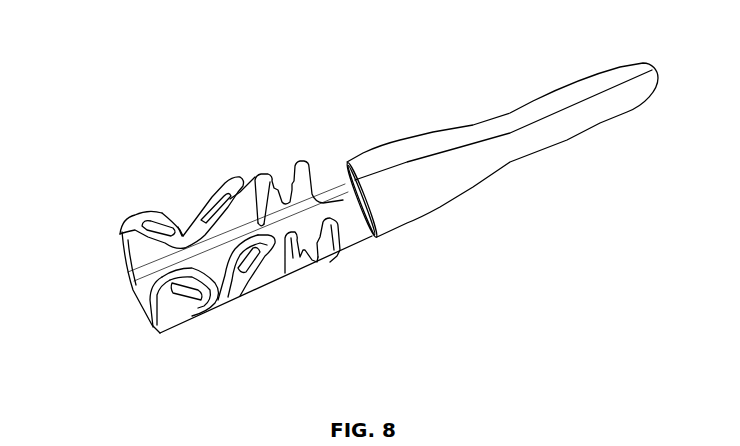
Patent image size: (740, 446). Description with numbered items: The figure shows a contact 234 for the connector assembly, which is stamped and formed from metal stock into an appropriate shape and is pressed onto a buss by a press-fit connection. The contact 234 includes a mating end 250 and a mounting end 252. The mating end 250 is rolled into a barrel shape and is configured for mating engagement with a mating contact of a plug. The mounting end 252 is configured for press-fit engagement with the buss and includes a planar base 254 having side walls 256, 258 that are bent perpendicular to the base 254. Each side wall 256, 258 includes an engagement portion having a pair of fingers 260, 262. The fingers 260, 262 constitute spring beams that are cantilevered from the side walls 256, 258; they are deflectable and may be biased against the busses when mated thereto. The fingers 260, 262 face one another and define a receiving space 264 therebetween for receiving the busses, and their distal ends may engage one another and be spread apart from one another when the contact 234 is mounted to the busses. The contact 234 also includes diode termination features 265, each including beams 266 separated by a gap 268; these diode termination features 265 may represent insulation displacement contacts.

The contact 234 is at (180, 108).
The mating end 250 is at (641, 65).
The mounting end 252 is at (172, 332).
The planar base 254 is at (140, 301).
The side wall 256 is at (170, 314).
The side wall 258 is at (135, 254).
The finger 260 is at (168, 213).
The finger 262 is at (202, 200).
The receiving space 264 is at (188, 214).
The diode termination feature 265 is at (274, 157).
The beam 266 is at (333, 240).
The gap 268 is at (322, 263).